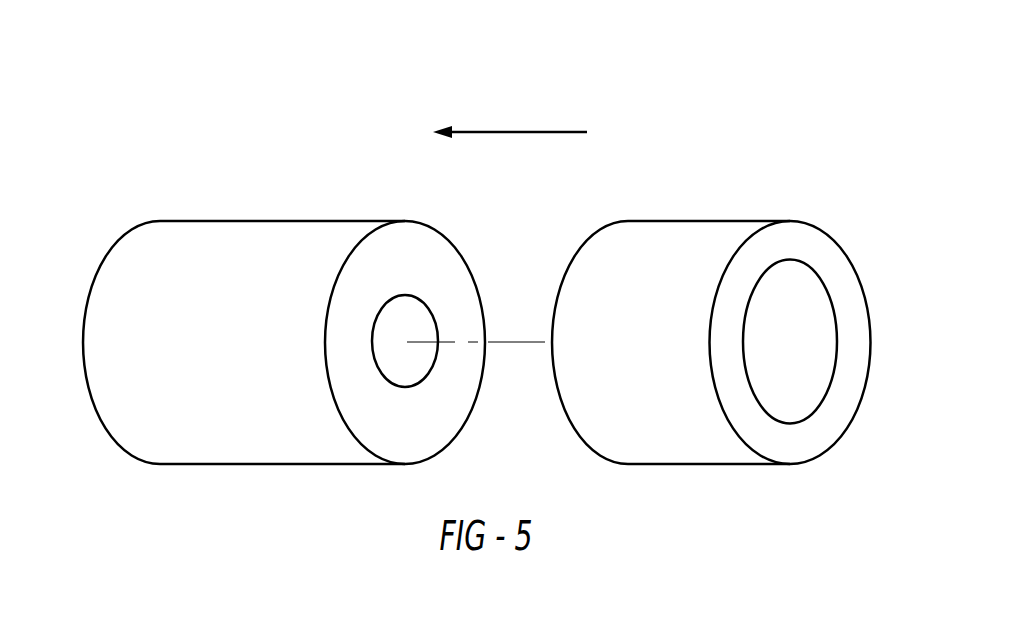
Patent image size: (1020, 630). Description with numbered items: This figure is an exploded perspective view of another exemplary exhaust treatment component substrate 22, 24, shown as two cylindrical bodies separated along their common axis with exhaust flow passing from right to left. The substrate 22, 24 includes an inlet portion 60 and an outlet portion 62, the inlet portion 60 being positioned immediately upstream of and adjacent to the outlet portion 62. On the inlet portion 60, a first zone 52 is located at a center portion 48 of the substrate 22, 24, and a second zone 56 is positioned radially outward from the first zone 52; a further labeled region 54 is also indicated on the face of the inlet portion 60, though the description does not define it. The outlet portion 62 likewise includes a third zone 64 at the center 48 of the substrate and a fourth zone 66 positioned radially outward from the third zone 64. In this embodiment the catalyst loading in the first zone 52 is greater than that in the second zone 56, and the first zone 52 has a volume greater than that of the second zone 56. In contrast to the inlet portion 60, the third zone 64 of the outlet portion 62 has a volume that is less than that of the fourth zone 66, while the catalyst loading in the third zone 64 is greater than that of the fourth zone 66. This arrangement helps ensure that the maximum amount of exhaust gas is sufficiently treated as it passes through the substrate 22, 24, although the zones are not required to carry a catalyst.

The exhaust treatment component substrate 22 is at (476, 266).
The exhaust treatment component substrate 24 is at (793, 128).
The center portion 48 is at (407, 355).
The first zone 52 is at (779, 335).
The inlet face 54 is at (812, 249).
The second zone 56 is at (838, 407).
The inlet portion 60 is at (630, 208).
The outlet portion 62 is at (408, 208).
The third zone 64 is at (392, 372).
The fourth zone 66 is at (427, 258).